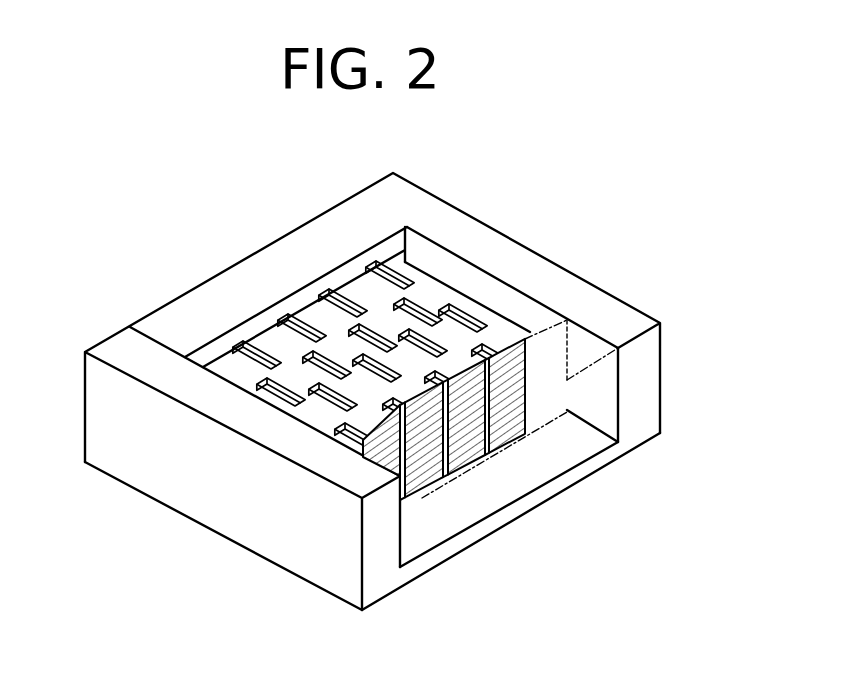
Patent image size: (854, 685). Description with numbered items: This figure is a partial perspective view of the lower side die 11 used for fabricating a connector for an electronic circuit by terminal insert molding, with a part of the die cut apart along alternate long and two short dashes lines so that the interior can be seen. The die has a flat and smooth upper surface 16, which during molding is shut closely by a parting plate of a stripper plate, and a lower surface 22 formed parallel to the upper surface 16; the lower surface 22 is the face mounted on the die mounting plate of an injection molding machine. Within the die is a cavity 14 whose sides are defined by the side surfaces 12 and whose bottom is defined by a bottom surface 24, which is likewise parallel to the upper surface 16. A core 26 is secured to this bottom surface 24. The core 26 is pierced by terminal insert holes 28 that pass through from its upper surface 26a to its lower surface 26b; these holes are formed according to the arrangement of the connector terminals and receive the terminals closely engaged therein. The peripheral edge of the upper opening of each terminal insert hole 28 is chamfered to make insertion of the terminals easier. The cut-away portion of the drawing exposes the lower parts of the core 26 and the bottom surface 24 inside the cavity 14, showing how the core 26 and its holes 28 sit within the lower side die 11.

The lower side die 11 is at (593, 178).
The side surfaces 12 is at (198, 500).
The cavity 14 is at (385, 318).
The upper surface 16 is at (282, 263).
The lower surface 22 is at (503, 528).
The bottom surface 24 is at (548, 447).
The core 26 is at (513, 330).
The upper surface 26a is at (282, 340).
The lower surface 26b is at (480, 467).
The terminal insert holes 28 is at (487, 343).